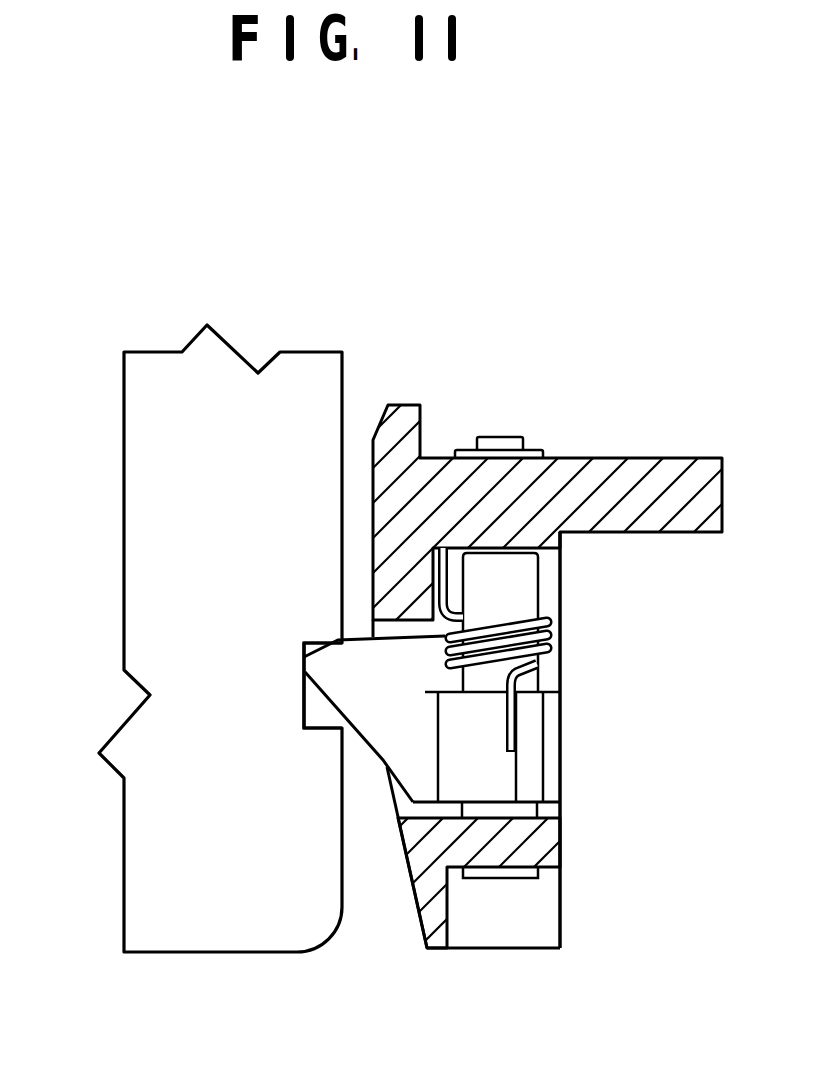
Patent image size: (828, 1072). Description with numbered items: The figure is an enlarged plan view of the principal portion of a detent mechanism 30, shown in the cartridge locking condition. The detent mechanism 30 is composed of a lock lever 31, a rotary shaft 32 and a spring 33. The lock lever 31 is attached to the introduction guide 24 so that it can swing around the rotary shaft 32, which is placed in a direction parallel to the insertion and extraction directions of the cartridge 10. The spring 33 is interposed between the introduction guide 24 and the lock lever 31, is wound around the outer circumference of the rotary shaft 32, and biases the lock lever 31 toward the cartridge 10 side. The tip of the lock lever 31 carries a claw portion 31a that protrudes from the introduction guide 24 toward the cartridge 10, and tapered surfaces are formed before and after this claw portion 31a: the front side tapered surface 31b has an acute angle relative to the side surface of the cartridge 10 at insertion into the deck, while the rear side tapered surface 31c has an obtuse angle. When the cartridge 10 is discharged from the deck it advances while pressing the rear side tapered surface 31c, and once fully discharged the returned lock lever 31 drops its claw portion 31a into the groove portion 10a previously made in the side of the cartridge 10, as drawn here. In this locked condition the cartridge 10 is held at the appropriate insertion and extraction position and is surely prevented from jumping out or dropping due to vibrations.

The cartridge 10 is at (203, 908).
The groove portion 10a is at (320, 703).
The introduction guide 24 is at (607, 475).
The detent mechanism 30 is at (568, 808).
The lock lever 31 is at (355, 783).
The claw portion 31a is at (388, 702).
The front side tapered surface 31b is at (338, 712).
The rear side tapered surface 31c is at (320, 645).
The rotary shaft 32 is at (522, 587).
The spring 33 is at (552, 640).